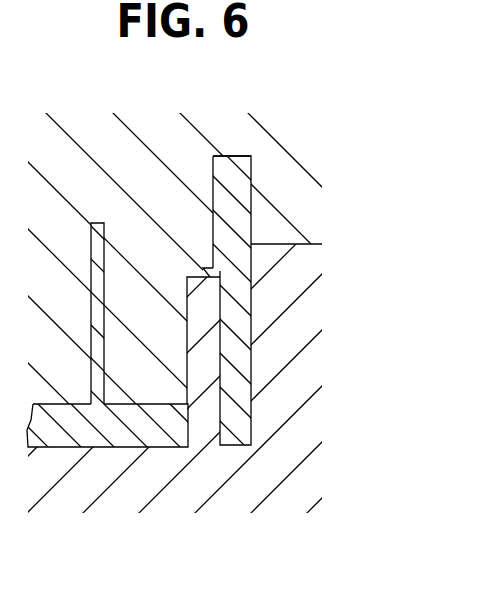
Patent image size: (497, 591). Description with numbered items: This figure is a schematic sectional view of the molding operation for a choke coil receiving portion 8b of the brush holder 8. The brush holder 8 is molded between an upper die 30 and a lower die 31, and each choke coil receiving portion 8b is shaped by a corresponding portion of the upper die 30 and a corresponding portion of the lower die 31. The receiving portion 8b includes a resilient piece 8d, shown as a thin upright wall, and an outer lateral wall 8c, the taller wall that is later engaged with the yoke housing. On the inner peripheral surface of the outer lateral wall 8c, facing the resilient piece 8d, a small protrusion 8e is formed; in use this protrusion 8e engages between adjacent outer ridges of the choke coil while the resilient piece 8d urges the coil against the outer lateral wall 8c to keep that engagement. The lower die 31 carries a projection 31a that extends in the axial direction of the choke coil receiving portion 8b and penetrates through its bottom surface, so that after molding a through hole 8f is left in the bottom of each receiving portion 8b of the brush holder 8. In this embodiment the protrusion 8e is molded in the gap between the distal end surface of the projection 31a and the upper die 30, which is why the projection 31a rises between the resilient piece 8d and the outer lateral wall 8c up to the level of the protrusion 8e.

The brush holder 8 is at (254, 300).
The choke coil receiving portion 8b is at (211, 160).
The outer lateral wall 8c is at (244, 153).
The resilient piece 8d is at (97, 222).
The protrusion 8e is at (204, 268).
The through hole 8f is at (196, 433).
The upper die 30 is at (217, 127).
The lower die 31 is at (226, 504).
The projection 31a is at (186, 325).